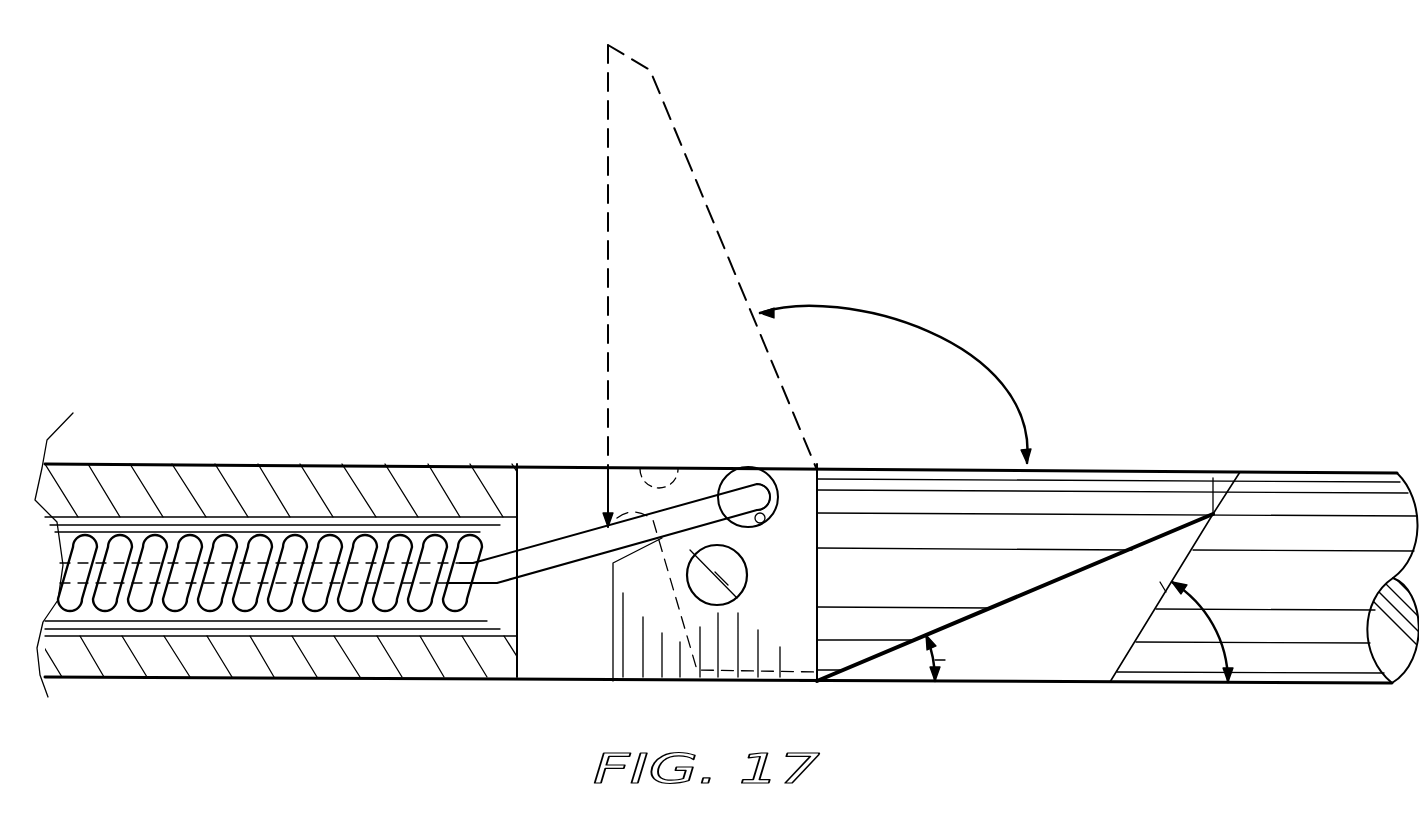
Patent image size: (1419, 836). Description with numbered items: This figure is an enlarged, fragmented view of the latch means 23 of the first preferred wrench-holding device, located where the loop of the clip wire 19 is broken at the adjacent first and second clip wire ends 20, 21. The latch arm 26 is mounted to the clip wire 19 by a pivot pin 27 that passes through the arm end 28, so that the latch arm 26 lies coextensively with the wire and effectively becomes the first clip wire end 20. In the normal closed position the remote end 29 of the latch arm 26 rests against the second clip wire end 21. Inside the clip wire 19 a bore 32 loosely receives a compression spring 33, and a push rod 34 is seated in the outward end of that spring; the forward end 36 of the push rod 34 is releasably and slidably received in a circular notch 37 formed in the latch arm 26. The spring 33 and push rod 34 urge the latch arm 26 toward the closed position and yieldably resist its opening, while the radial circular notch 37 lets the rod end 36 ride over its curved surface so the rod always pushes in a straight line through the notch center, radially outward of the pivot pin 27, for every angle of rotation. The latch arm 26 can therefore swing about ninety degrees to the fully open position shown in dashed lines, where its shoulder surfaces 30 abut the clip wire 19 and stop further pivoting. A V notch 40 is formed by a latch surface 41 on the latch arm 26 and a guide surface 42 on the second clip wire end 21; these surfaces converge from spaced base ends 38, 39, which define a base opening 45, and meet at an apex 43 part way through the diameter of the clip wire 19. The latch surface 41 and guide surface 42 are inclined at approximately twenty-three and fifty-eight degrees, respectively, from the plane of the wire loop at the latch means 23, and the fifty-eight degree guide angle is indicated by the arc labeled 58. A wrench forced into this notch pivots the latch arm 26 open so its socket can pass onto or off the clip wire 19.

The clip wire 19 is at (1316, 468).
The first clip wire end 20 is at (492, 464).
The second clip wire end 21 is at (1180, 660).
The latch means 23 is at (1066, 455).
The latch arm 26 is at (668, 226).
The pivot pin 27 is at (740, 597).
The end of latch arm 28 is at (630, 643).
The remote end of latch arm 29 is at (1212, 478).
The shoulder surfaces 30 is at (683, 468).
The bore 32 is at (378, 522).
The compression spring 33 is at (283, 548).
The push rod 34 is at (560, 558).
The forward end of push rod 36 is at (765, 500).
The circular notch 37 is at (760, 530).
The base end of latch surface 38 is at (817, 683).
The base end of guide surface 39 is at (1108, 690).
The V notch 40 is at (1043, 673).
The latch surface 41 is at (1000, 607).
The guide surface 42 is at (1160, 590).
The apex 43 is at (1215, 518).
The base opening 45 is at (940, 660).
The angle 58 degrees 58 is at (1225, 635).